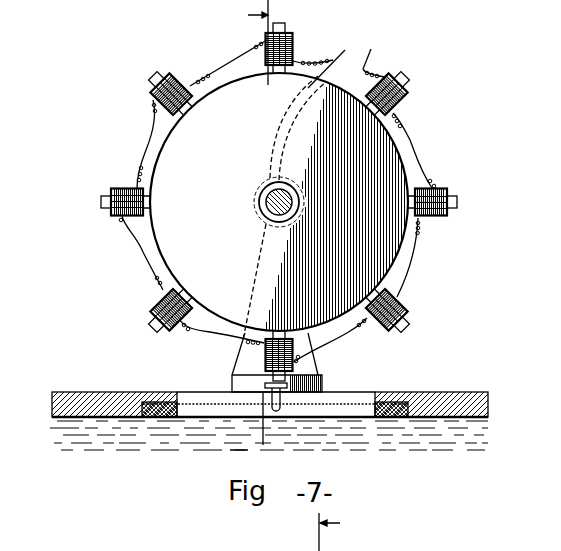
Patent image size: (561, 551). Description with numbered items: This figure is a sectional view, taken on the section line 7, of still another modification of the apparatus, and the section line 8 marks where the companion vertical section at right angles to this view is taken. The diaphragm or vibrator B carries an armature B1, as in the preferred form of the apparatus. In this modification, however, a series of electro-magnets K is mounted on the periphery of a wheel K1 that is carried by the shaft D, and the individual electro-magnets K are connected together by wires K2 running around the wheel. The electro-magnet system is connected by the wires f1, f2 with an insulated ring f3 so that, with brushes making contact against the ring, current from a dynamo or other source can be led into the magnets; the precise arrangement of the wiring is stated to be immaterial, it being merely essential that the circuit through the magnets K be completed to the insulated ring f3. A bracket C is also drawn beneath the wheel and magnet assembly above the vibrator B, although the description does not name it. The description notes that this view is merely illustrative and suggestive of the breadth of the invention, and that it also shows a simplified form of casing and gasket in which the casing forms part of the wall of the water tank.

The electro-magnets K is at (122, 188).
The wheel K1 is at (279, 202).
The wires K2 is at (143, 252).
The shaft D is at (280, 196).
The bracket C is at (322, 368).
The diaphragm or vibrator B is at (207, 405).
The armature B1 is at (287, 393).
The wire f1 is at (310, 106).
The wire f2 is at (376, 51).
The insulated ring f3 is at (242, 282).
The section line 8 is at (251, 233).
The section line 7 is at (329, 526).